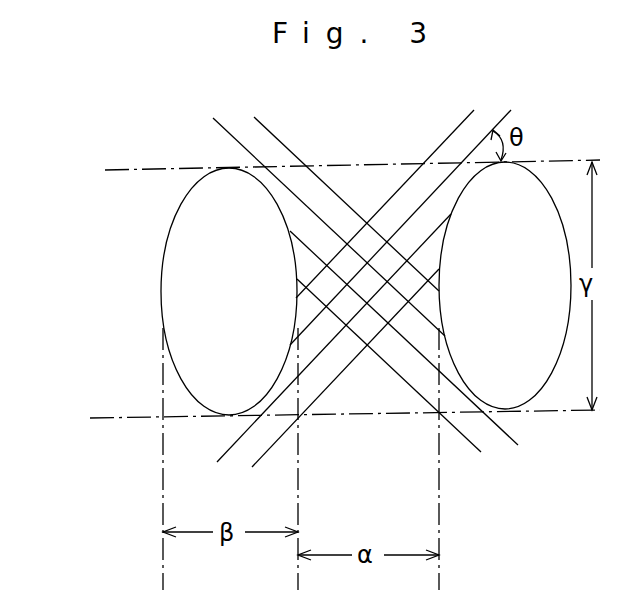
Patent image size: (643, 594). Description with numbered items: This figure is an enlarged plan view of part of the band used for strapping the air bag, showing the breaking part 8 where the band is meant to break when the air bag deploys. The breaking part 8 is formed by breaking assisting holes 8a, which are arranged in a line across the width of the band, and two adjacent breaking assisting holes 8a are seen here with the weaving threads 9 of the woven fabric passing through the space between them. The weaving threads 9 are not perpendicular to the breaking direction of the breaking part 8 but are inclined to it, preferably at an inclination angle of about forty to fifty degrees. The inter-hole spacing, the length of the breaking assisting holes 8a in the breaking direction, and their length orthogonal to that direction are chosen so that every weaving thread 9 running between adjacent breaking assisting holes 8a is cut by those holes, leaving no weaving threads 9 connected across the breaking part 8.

The breaking part 8 is at (161, 162).
The breaking assisting holes 8a is at (166, 291).
The weaving thread 9 is at (274, 135).